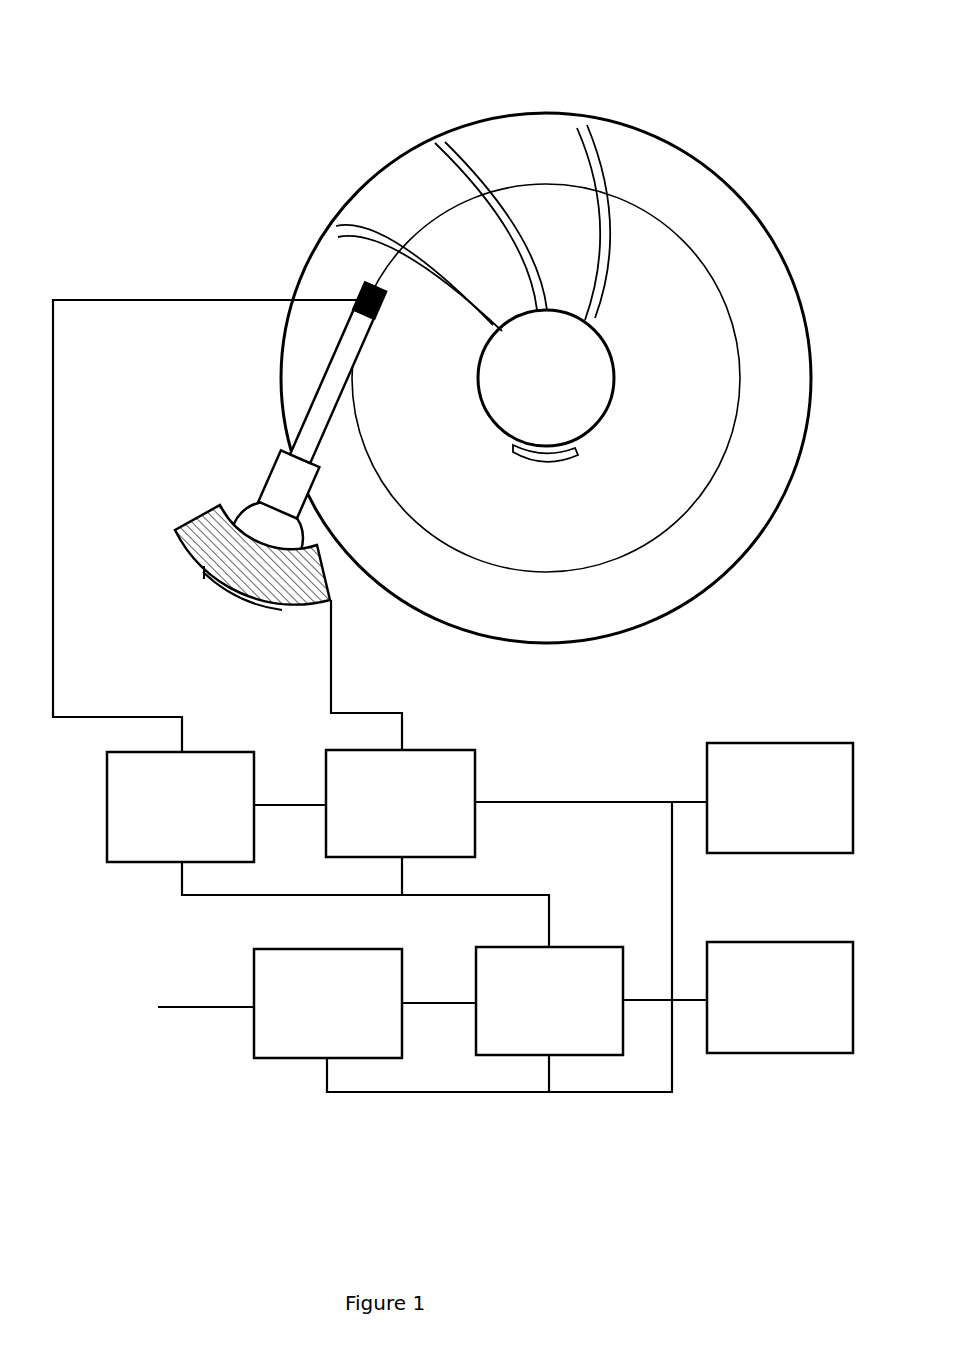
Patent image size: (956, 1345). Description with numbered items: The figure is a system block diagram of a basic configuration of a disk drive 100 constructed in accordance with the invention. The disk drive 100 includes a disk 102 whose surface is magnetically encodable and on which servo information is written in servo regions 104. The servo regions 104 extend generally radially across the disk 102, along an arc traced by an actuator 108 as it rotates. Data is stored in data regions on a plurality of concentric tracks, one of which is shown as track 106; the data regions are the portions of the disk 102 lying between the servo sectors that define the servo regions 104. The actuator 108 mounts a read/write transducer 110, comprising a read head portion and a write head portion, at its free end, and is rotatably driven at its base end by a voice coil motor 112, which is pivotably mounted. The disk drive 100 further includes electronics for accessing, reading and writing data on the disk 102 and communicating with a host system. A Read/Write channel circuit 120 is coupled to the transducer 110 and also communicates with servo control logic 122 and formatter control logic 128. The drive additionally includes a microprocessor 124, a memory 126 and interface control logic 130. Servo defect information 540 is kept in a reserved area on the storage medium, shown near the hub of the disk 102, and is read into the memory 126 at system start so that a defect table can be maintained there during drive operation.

The disk drive 100 is at (177, 56).
The disk 102 is at (414, 149).
The servo regions 104 is at (612, 257).
The track 106 is at (740, 401).
The actuator 108 is at (221, 460).
The read/write transducer 110 is at (363, 288).
The voice coil motor 112 is at (179, 513).
The Read/Write channel circuit 120 is at (180, 807).
The servo control logic 122 is at (400, 803).
The microprocessor 124 is at (780, 798).
The memory 126 is at (780, 997).
The formatter control logic 128 is at (549, 1001).
The interface control logic 130 is at (328, 1003).
The servo defect information 540 is at (537, 458).